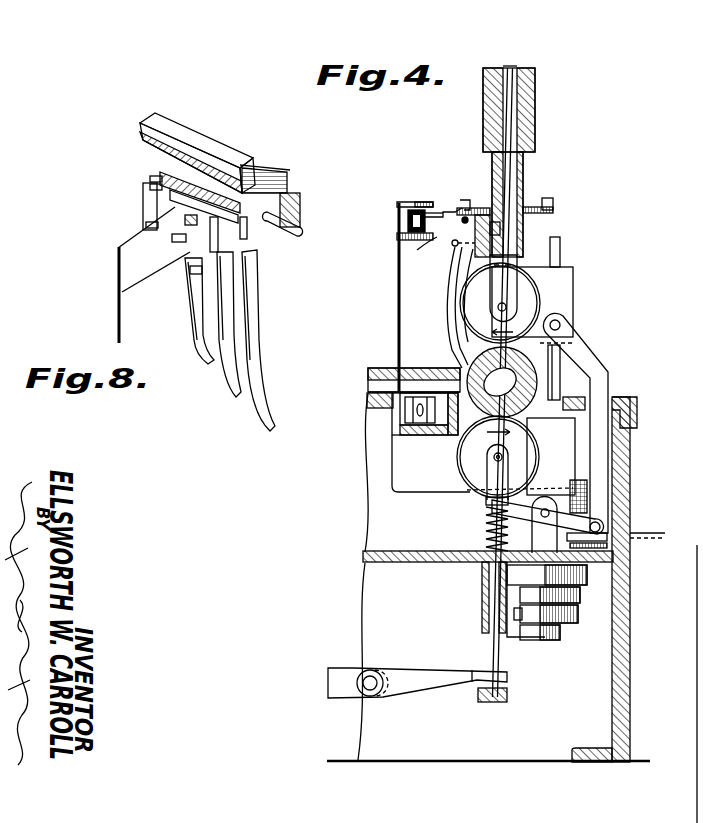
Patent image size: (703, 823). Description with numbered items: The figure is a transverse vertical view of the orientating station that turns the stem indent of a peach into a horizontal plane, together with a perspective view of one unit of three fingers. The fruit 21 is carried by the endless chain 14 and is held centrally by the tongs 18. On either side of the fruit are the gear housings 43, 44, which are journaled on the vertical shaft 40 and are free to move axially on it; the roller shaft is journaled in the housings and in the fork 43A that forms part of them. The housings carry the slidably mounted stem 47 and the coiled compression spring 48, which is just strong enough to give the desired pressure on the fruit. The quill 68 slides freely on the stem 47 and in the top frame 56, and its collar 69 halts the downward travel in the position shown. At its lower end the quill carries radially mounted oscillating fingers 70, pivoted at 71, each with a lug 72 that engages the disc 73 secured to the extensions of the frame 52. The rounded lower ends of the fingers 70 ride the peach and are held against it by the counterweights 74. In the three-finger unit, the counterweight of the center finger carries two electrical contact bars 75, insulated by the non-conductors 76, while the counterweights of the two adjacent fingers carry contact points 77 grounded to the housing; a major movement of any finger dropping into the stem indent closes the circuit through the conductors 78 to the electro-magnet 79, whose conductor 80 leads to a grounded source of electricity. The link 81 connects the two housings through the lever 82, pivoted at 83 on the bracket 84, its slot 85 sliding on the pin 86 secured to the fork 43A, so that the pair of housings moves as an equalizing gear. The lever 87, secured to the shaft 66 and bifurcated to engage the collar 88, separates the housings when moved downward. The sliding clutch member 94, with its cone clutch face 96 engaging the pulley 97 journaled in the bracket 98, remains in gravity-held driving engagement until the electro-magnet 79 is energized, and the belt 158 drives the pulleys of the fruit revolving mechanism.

In FIG. 4, the endless chain 14 is at (418, 424).
In FIG. 4, the tongs 18 is at (408, 385).
In FIG. 4, the fruit 21 is at (522, 363).
In FIG. 4, the vertical shaft 40 is at (560, 252).
In FIG. 4, the gear housing 43 is at (563, 447).
In FIG. 4, the fork 43A is at (514, 290).
In FIG. 4, the gear housing 44 is at (574, 283).
In FIG. 4, the stem 47 is at (514, 243).
In FIG. 4, the coiled compression spring 48 is at (485, 527).
In FIG. 4, the frame 52 is at (553, 207).
In FIG. 8, the frame 52 is at (213, 145).
In FIG. 4, the top frame 56 is at (535, 107).
In FIG. 4, the shaft 66 is at (371, 670).
In FIG. 4, the quill 68 is at (523, 174).
In FIG. 8, the quill 68 is at (301, 204).
In FIG. 4, the collar 69 is at (536, 72).
In FIG. 4, the fingers 70 is at (447, 288).
In FIG. 8, the fingers 70 is at (195, 314).
In FIG. 4, the pivot 71 is at (462, 224).
In FIG. 8, the pivot 71 is at (300, 229).
In FIG. 4, the lug 72 is at (443, 207).
In FIG. 4, the disc 73 is at (460, 207).
In FIG. 8, the disc 73 is at (275, 170).
In FIG. 4, the counterweights 74 is at (408, 221).
In FIG. 8, the counterweights 74 is at (143, 204).
In FIG. 4, the electrical contact bars 75 is at (430, 210).
In FIG. 8, the electrical contact bars 75 is at (153, 180).
In FIG. 8, the non-conductors 76 is at (174, 241).
In FIG. 8, the electrical contact points 77 is at (150, 188).
In FIG. 4, the electrical conductors 78 is at (400, 202).
In FIG. 8, the electrical conductors 78 is at (117, 274).
In FIG. 4, the electro-magnet 79 is at (580, 517).
In FIG. 4, the conductor 80 is at (640, 538).
In FIG. 4, the link 81 is at (598, 357).
In FIG. 4, the lever 82 is at (600, 521).
In FIG. 4, the pivot 83 is at (553, 493).
In FIG. 4, the bracket 84 is at (545, 534).
In FIG. 4, the slot 85 is at (486, 502).
In FIG. 4, the pin 86 is at (470, 489).
In FIG. 4, the lever 87 is at (435, 658).
In FIG. 4, the collar 88 is at (508, 690).
In FIG. 4, the sliding clutch member 94 is at (530, 573).
In FIG. 4, the cone clutch face 96 is at (580, 595).
In FIG. 4, the pulley 97 is at (578, 613).
In FIG. 4, the bracket 98 is at (527, 633).
In FIG. 4, the belt 158 is at (514, 614).